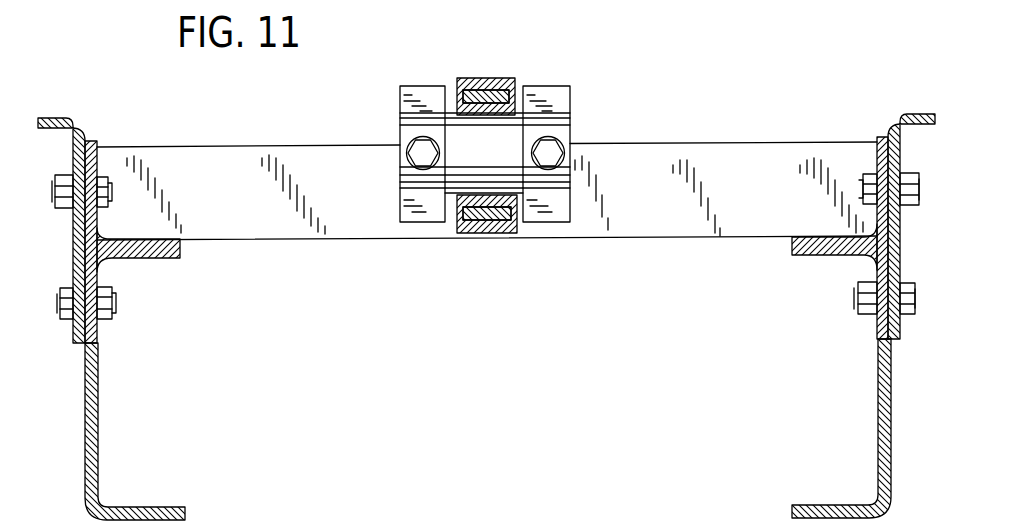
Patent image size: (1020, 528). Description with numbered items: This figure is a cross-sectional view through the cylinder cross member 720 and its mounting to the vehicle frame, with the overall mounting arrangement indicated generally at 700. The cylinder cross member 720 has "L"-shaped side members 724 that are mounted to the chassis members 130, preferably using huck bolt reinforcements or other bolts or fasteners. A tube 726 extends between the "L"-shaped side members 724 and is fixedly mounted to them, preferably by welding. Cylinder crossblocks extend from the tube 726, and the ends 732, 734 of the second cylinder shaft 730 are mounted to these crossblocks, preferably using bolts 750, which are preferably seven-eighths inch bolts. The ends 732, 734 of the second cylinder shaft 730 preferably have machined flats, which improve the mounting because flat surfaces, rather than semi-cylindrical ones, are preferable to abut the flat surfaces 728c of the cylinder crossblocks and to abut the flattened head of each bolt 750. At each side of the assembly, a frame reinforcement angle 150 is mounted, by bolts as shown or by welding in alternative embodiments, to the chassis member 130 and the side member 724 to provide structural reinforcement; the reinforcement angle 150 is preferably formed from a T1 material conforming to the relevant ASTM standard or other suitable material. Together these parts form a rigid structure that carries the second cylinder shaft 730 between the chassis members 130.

The chassis member 130 is at (171, 508).
The frame reinforcement angle 150 is at (76, 126).
The clamp assembly 700 is at (543, 163).
The cylinder cross member 720 is at (646, 136).
The L-shaped side member 724 is at (183, 244).
The tube 726 is at (737, 217).
The flat surface 728c is at (436, 95).
The second cylinder shaft 730 is at (465, 183).
The end of second cylinder shaft 732 is at (535, 167).
The end of second cylinder shaft 734 is at (403, 170).
The bolt 750 is at (415, 150).